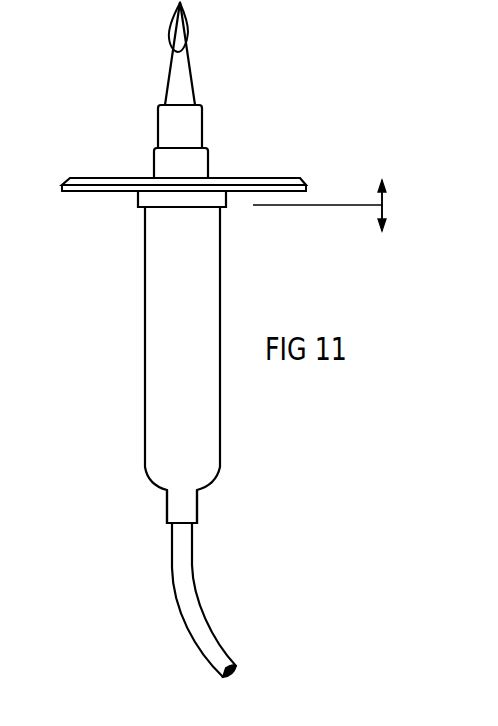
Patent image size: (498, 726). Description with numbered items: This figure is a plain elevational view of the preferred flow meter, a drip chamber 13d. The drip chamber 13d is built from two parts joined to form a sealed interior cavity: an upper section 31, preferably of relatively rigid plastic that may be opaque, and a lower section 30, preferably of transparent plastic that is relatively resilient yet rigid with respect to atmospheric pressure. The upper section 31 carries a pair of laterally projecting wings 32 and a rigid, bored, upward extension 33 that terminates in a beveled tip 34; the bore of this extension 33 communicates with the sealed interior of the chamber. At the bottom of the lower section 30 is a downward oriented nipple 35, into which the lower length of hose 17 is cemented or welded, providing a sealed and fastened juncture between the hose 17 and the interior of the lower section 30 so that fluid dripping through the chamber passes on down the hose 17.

The drip chamber 13d is at (127, 325).
The hose 17 is at (203, 628).
The lower section 30 is at (324, 224).
The upper section 31 is at (378, 185).
The wings 32 is at (98, 180).
The rigid bored upward extension 33 is at (202, 76).
The beveled tip 34 is at (188, 13).
The nipple 35 is at (185, 506).